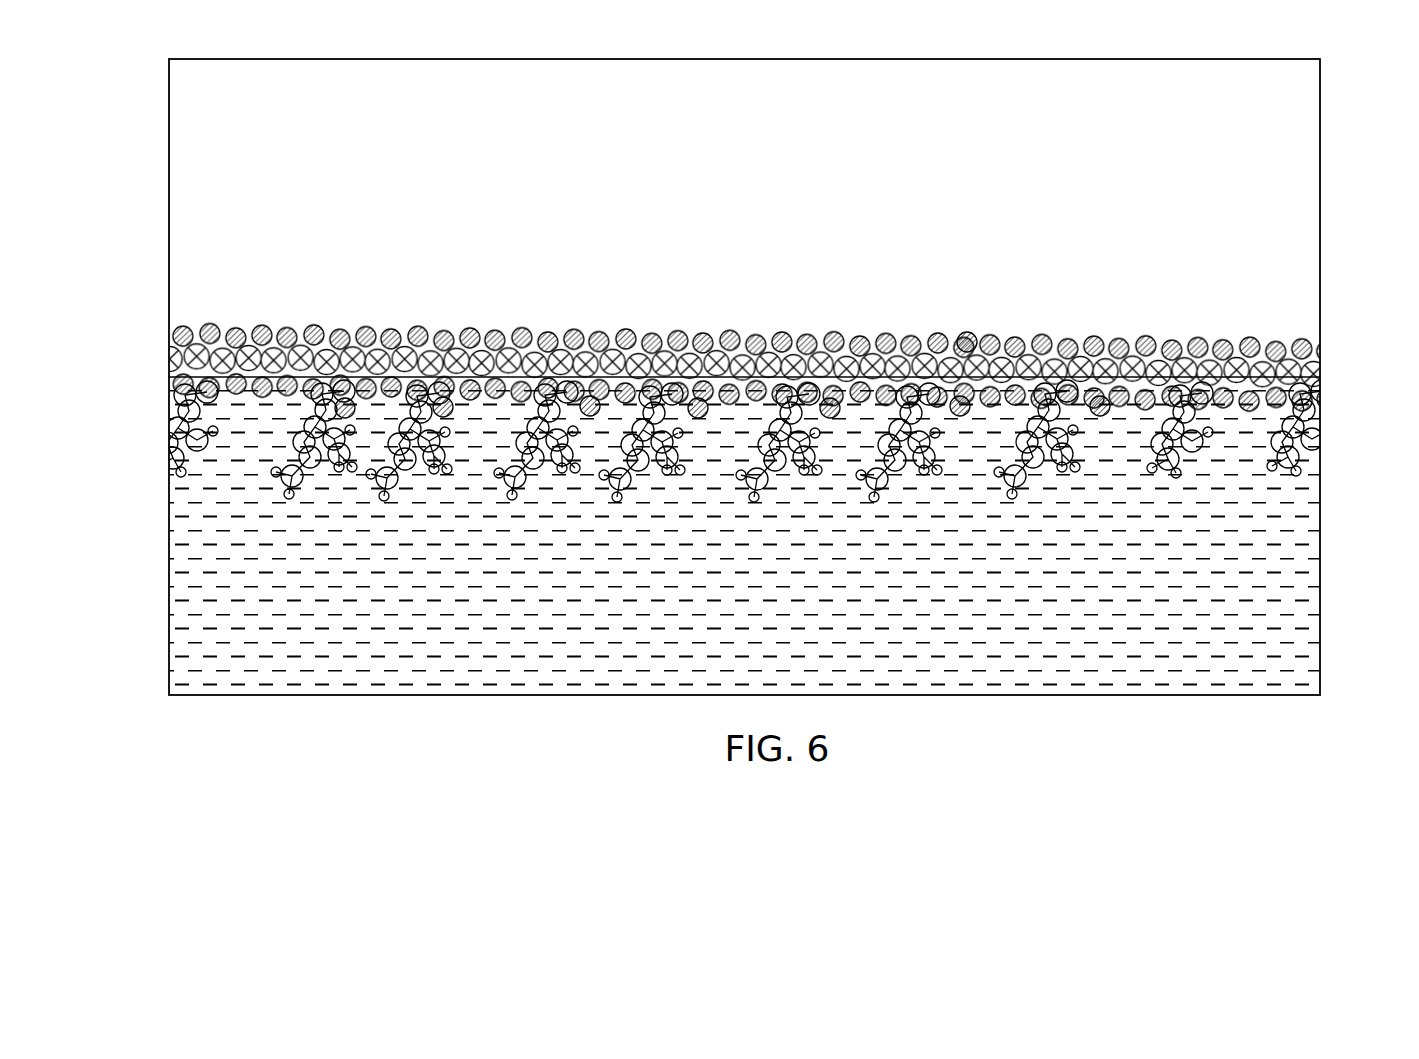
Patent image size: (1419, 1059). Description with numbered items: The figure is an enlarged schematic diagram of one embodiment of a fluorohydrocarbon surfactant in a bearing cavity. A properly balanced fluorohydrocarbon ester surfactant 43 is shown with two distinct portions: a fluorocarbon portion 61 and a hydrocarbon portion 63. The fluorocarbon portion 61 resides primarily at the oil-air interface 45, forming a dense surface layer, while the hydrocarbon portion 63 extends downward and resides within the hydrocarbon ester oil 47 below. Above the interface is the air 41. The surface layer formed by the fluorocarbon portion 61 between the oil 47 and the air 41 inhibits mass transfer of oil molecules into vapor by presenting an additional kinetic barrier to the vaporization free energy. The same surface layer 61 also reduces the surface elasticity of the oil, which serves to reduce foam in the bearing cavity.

The air 41 is at (884, 153).
The fluorohydrocarbon ester surfactant 43 is at (1128, 292).
The oil-air interface 45 is at (130, 356).
The hydrocarbon ester oil 47 is at (1290, 616).
The fluorocarbon portion 61 is at (966, 331).
The hydrocarbon portion 63 is at (520, 470).